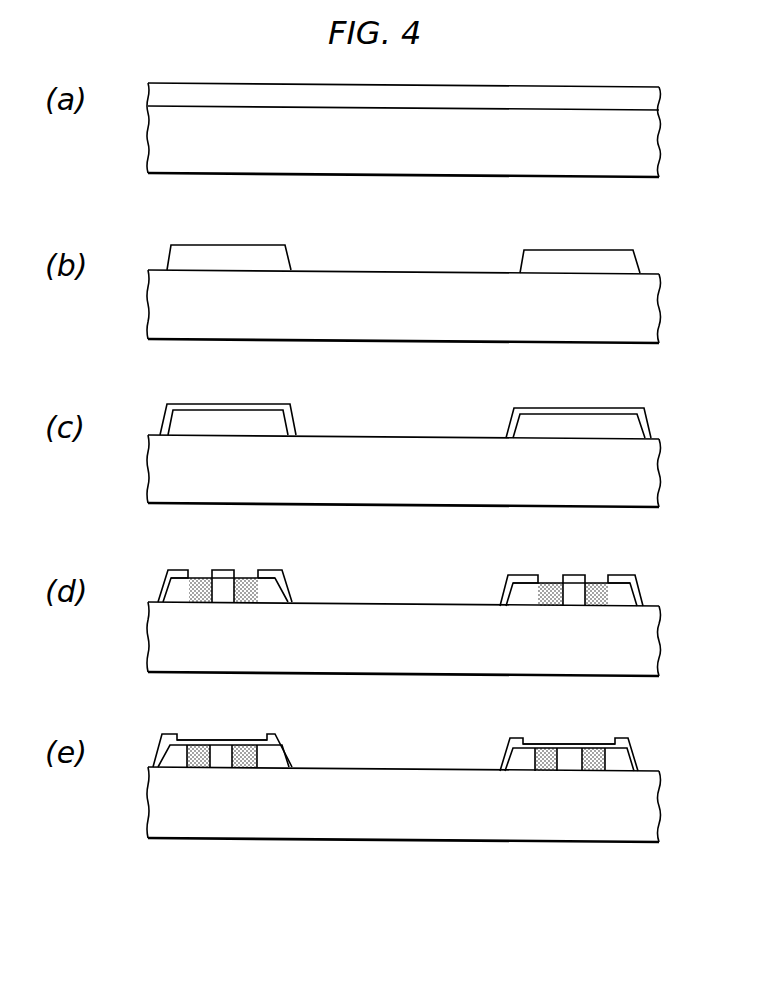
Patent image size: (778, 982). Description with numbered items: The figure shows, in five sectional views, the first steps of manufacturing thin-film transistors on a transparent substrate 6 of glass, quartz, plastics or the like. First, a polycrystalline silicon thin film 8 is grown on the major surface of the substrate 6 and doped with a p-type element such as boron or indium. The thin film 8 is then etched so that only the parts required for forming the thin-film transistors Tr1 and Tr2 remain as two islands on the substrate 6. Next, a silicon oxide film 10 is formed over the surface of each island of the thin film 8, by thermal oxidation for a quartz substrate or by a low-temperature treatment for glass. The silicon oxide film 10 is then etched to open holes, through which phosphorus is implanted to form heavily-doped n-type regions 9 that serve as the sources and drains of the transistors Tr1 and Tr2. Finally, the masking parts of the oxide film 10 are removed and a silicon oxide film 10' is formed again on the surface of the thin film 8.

The transparent substrate 6 is at (160, 134).
The polycrystalline silicon thin film 8 is at (158, 95).
The heavily-doped n-type regions 9 is at (246, 578).
The silicon oxide film 10 is at (388, 567).
The silicon oxide film 10' is at (396, 722).
The thin-film transistor Tr1 is at (578, 236).
The thin-film transistor Tr2 is at (228, 231).